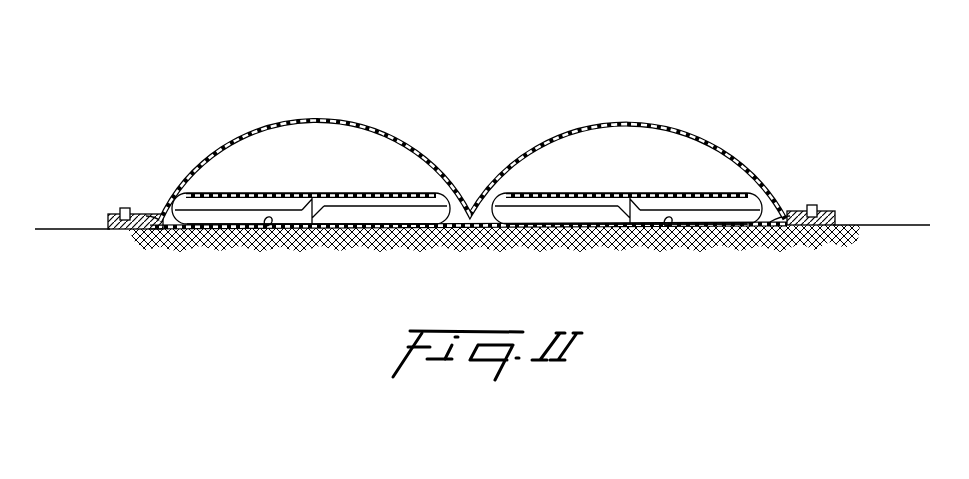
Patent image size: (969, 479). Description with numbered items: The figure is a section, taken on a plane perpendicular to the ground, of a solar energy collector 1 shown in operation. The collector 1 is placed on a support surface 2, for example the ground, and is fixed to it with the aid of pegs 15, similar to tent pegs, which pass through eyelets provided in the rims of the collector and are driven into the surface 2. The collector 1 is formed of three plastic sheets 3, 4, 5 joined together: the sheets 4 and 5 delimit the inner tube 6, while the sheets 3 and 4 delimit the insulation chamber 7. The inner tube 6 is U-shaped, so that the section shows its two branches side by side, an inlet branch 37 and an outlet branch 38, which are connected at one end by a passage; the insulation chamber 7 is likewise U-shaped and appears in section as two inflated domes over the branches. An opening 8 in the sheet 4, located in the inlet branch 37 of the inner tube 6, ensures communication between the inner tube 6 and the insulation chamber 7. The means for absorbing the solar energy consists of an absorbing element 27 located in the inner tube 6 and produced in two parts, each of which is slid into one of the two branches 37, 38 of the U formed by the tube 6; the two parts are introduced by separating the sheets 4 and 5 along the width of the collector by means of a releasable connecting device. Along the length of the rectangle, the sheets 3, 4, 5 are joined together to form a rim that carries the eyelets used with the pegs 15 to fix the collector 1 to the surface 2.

The collector 1 is at (405, 128).
The surface 2 is at (85, 228).
The plastic sheet 3 is at (302, 133).
The plastic sheet 4 is at (268, 193).
The plastic sheet 5 is at (270, 226).
The inner tube 6 is at (398, 200).
The insulation chamber 7 is at (358, 163).
The opening 8 is at (294, 194).
The pegs 15 is at (137, 250).
The absorbing element 27 is at (236, 209).
The inlet branch 37 is at (357, 218).
The outlet branch 38 is at (600, 217).